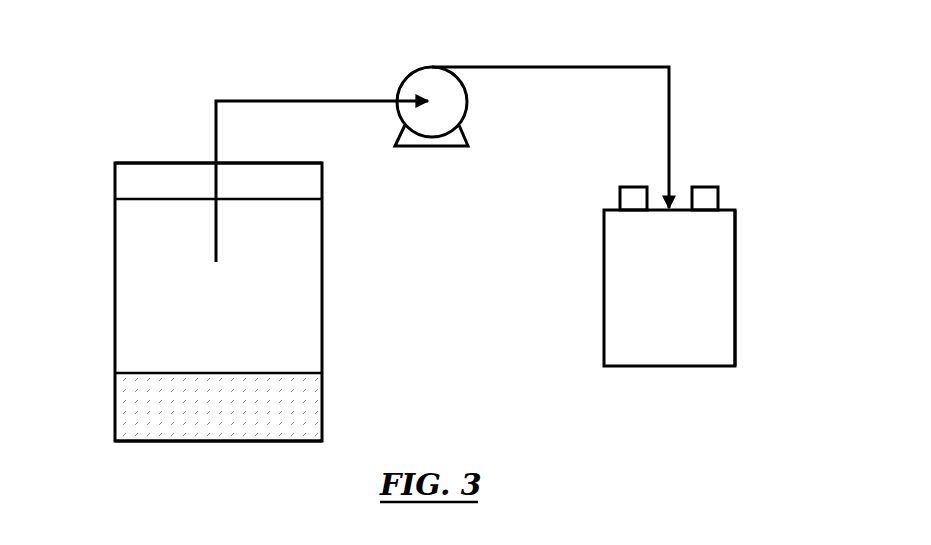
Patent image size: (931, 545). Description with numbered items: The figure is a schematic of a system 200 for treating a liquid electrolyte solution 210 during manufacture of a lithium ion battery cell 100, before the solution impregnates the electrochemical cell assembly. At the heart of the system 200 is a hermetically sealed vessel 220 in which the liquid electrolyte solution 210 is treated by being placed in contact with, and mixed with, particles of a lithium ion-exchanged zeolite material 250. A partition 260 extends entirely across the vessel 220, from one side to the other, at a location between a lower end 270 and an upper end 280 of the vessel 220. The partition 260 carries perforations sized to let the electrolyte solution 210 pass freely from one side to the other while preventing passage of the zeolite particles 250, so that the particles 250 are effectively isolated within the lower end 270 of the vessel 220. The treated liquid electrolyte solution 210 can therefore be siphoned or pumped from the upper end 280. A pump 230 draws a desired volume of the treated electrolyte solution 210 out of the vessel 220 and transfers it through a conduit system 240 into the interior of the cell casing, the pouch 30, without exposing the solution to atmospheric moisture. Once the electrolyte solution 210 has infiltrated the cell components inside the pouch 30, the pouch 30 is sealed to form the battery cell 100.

The system 200 is at (206, 46).
The hermetically sealed vessel 220 is at (114, 296).
The upper end 280 is at (147, 161).
The liquid electrolyte solution 210 is at (244, 336).
The lithium ion-exchanged zeolite material 250 is at (303, 413).
The partition 260 is at (288, 372).
The lower end 270 is at (147, 443).
The pump 230 is at (426, 66).
The conduit system 240 is at (585, 64).
The lithium ion battery cell 100 is at (748, 199).
The pouch 30 is at (737, 304).